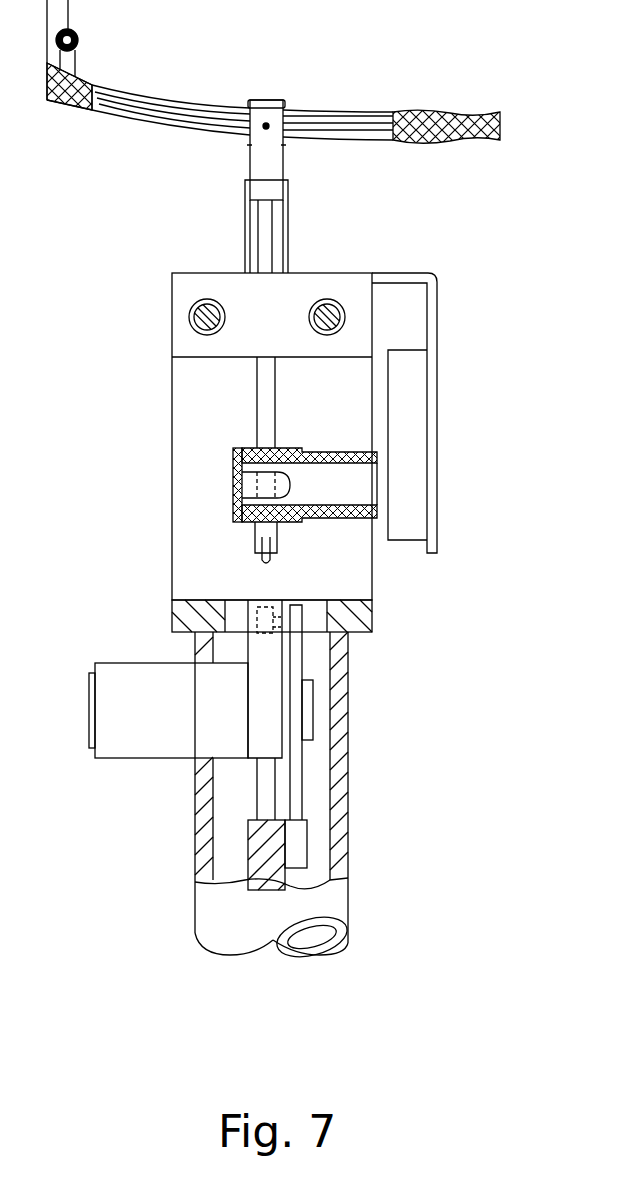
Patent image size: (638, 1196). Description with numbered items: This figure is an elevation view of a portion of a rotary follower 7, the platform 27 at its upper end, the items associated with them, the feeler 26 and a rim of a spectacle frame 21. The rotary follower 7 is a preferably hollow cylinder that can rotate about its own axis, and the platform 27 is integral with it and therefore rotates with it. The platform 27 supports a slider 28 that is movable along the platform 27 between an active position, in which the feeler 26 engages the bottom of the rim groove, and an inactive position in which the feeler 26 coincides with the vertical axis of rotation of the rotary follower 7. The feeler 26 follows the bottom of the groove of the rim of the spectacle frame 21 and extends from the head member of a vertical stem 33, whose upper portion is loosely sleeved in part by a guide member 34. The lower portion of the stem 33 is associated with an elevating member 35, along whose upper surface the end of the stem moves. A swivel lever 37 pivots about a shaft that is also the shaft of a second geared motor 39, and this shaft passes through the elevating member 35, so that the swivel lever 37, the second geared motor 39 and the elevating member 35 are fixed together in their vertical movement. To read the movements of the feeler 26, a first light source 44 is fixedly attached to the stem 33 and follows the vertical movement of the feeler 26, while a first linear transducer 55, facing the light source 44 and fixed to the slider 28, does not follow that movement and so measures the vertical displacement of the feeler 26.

The rotary follower 7 is at (213, 911).
The spectacle frame 21 is at (487, 112).
The feeler 26 is at (284, 110).
The platform 27 is at (173, 618).
The slider 28 is at (352, 290).
The vertical stem 33 is at (270, 390).
The guide member 34 is at (252, 232).
The elevating member 35 is at (270, 697).
The swivel lever 37 is at (297, 655).
The second geared motor 39 is at (170, 733).
The first light source 44 is at (238, 450).
The first linear transducer 55 is at (407, 523).